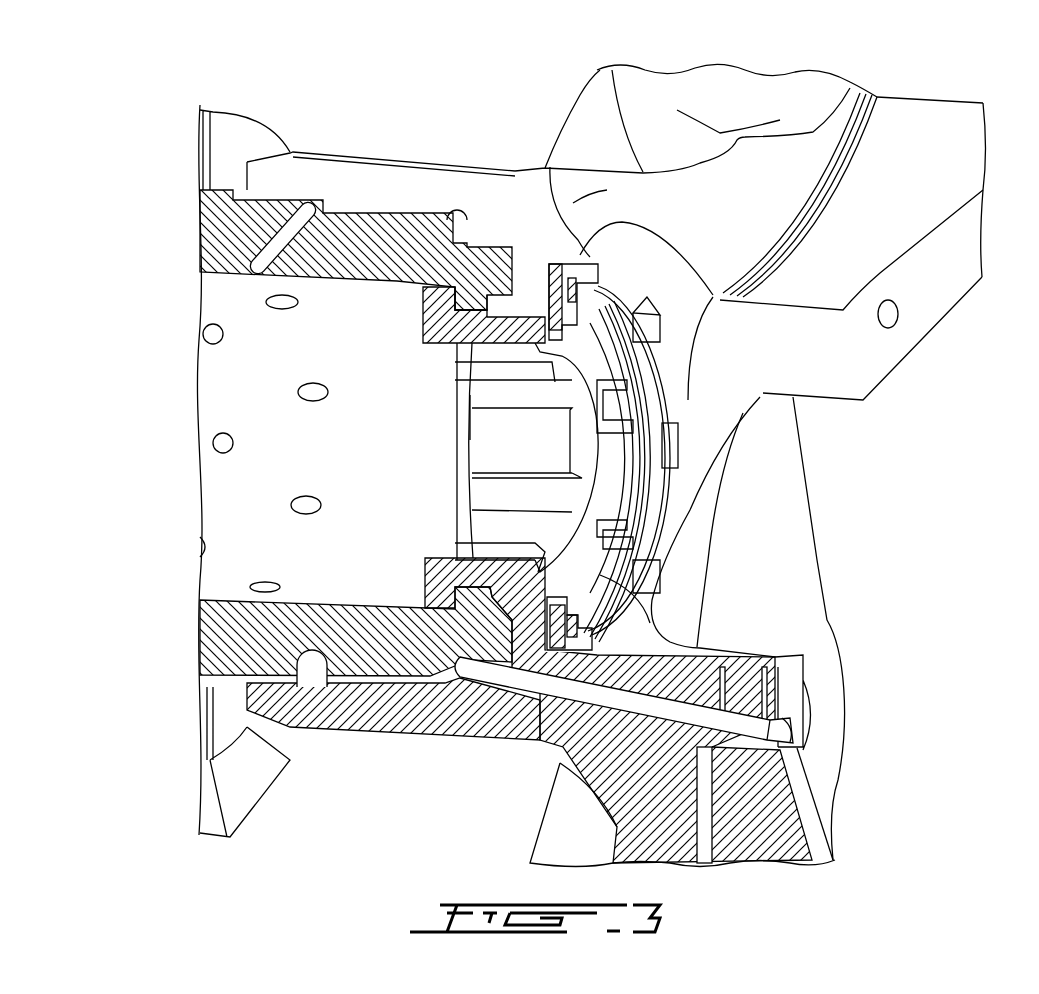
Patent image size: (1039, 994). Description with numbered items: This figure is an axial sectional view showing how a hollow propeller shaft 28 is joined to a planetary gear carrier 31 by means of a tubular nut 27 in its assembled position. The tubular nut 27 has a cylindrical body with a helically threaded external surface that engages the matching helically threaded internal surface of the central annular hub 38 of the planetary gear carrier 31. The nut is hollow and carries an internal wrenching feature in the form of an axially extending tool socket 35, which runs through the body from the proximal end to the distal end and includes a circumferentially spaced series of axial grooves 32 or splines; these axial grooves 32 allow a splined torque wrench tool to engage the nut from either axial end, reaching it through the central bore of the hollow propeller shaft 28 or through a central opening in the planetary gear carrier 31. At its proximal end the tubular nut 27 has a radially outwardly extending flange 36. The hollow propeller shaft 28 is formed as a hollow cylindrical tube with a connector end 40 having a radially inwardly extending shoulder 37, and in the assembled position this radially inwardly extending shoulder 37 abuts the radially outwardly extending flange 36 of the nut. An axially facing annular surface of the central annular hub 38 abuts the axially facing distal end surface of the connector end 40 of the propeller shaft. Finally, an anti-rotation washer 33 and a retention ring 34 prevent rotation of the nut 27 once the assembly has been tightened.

The tubular nut 27 is at (493, 443).
The hollow propeller shaft 28 is at (257, 630).
The planetary gear carrier 31 is at (907, 147).
The axial grooves 32 is at (500, 498).
The anti-rotation washer 33 is at (548, 262).
The retention ring 34 is at (647, 527).
The tool socket 35 is at (457, 418).
The radially outwardly extending flange 36 is at (413, 290).
The radially inwardly extending shoulder 37 is at (470, 300).
The central annular hub 38 is at (578, 205).
The connector end 40 is at (495, 640).